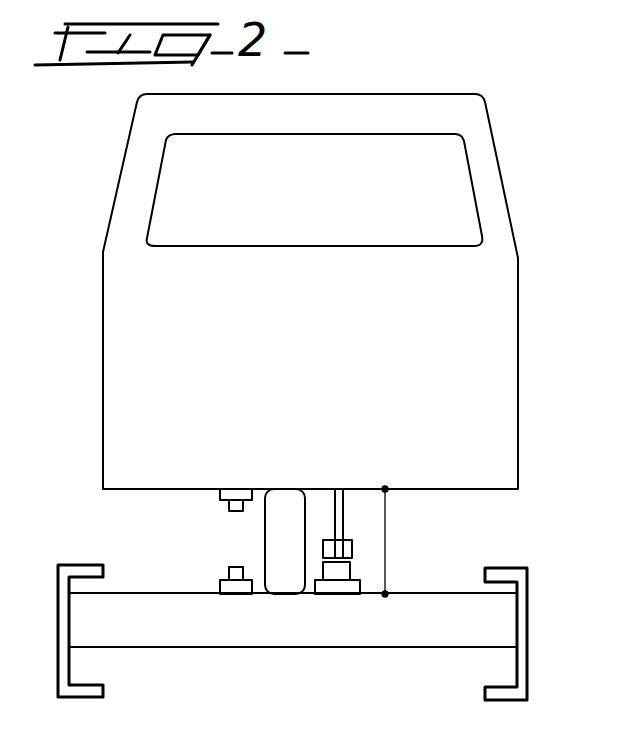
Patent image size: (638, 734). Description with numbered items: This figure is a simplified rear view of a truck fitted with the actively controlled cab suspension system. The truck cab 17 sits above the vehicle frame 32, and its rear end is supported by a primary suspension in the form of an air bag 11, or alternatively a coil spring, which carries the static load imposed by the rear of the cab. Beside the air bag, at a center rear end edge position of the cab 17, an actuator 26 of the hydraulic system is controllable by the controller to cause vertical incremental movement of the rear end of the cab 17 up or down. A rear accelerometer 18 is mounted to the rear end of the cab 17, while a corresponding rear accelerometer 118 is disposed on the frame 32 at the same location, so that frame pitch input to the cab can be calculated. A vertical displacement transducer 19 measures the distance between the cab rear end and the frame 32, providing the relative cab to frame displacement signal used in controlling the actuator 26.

The truck cab 17 is at (103, 330).
The air bag 11 is at (265, 545).
The rear accelerometer 18 is at (220, 495).
The rear accelerometer 118 is at (229, 578).
The actuator 26 is at (343, 505).
The vertical displacement transducer 19 is at (385, 523).
The frame 32 is at (185, 648).